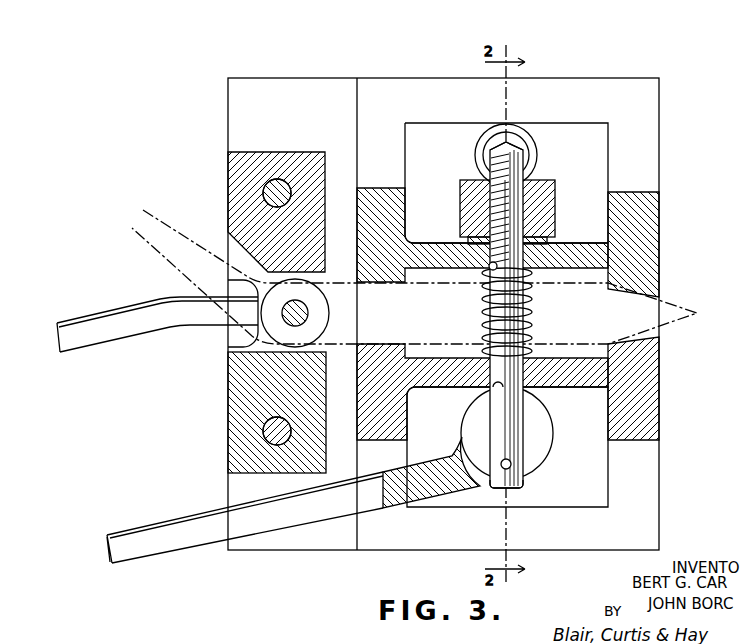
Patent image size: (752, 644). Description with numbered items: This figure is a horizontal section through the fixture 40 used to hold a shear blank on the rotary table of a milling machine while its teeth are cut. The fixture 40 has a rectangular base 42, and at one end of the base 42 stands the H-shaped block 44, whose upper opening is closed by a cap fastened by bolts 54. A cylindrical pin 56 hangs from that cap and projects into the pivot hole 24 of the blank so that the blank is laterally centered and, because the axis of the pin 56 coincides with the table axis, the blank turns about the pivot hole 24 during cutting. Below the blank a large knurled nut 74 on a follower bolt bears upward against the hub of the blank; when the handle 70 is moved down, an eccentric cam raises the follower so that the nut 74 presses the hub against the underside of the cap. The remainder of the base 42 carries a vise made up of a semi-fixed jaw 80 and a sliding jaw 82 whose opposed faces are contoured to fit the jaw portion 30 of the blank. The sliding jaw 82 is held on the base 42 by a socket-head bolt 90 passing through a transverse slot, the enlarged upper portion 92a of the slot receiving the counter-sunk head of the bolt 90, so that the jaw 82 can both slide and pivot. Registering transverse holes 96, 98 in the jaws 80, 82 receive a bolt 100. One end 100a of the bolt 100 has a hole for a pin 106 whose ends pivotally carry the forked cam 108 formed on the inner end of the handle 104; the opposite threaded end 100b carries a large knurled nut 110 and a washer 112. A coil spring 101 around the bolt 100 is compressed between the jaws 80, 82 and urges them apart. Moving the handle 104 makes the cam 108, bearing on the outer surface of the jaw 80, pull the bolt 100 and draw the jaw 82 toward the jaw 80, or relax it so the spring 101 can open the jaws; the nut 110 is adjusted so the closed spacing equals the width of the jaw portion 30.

The fixture 40 is at (672, 150).
The rectangular base 42 is at (279, 79).
The upstanding rectangular block 44 is at (228, 398).
The bolts 54 is at (274, 180).
The cylindrical pin 56 is at (308, 314).
The knurled nut 74 is at (322, 302).
The handle 70 is at (107, 315).
The pivot hole 24 is at (228, 349).
The jaw portion 30 is at (668, 295).
The sliding jaw 82 is at (652, 213).
The semi-fixed jaw 80 is at (655, 426).
The upper portion of slot 92a is at (525, 129).
The socket-head bolt 90 is at (530, 161).
The threaded end of bolt 100b is at (500, 150).
The bolt 100 is at (530, 297).
The end of bolt 100a is at (523, 486).
The coil spring 101 is at (532, 322).
The knurled nut 110 is at (557, 196).
The washer 112 is at (548, 243).
The transverse hole 98 is at (489, 263).
The transverse hole 96 is at (494, 388).
The pin 106 is at (512, 461).
The forked cam 108 is at (552, 448).
The handle 104 is at (196, 548).